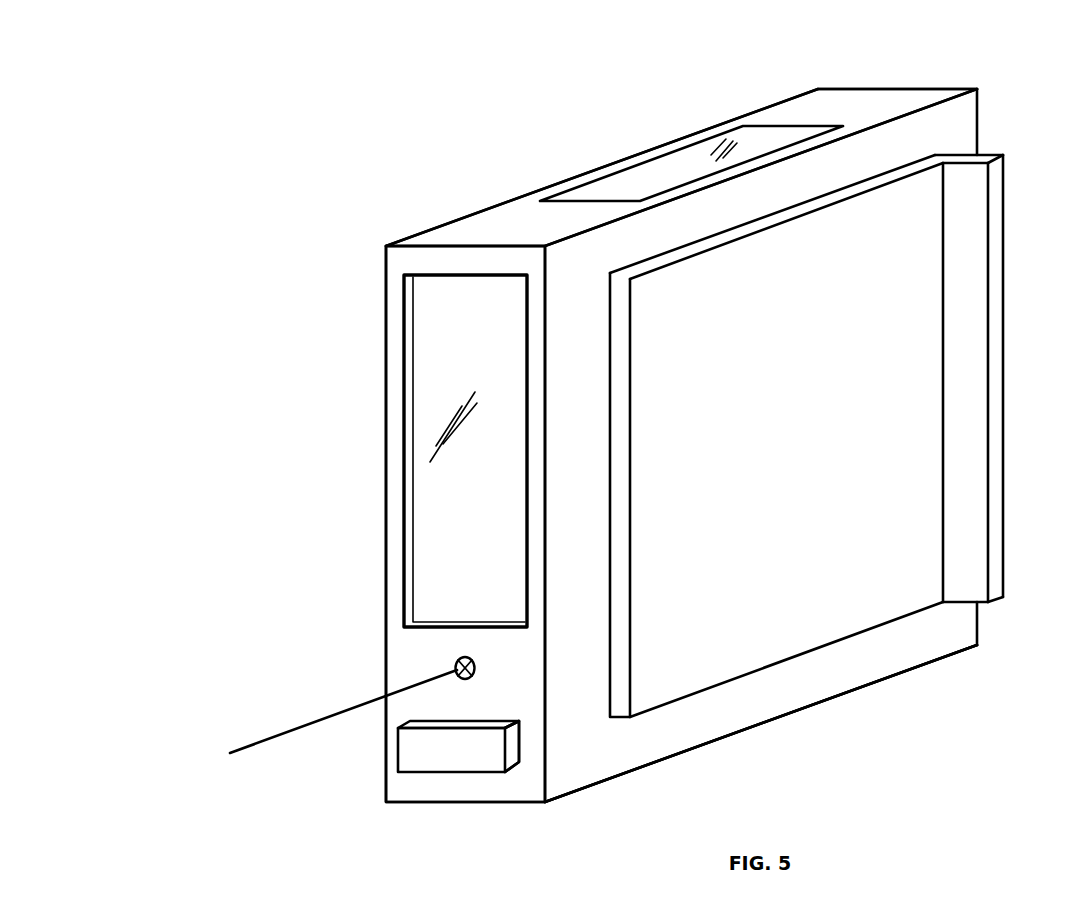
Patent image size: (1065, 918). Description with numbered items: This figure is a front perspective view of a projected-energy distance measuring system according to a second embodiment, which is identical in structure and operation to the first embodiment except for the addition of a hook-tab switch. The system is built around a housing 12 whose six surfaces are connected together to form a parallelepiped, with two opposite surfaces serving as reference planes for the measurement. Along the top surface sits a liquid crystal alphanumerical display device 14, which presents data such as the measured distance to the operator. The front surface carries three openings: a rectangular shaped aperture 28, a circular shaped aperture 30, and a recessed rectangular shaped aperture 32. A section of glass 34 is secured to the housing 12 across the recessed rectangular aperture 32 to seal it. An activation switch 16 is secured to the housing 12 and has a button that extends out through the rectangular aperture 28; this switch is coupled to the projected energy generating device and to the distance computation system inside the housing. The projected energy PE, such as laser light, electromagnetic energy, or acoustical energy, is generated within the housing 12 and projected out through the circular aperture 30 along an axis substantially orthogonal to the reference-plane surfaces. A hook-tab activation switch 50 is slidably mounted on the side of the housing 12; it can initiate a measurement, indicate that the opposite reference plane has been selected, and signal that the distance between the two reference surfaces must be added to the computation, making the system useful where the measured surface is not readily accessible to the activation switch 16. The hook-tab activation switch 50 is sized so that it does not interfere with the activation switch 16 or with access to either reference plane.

The housing 12 is at (818, 78).
The alphanumerical display device 14 is at (612, 185).
The activation switch 16 is at (413, 760).
The rectangular shaped aperture 28 is at (522, 753).
The circular shaped aperture 30 is at (455, 662).
The recessed rectangular shaped aperture 32 is at (409, 413).
The section of glass 34 is at (429, 326).
The hook-tab activation switch 50 is at (974, 210).
The projected energy PE is at (260, 740).